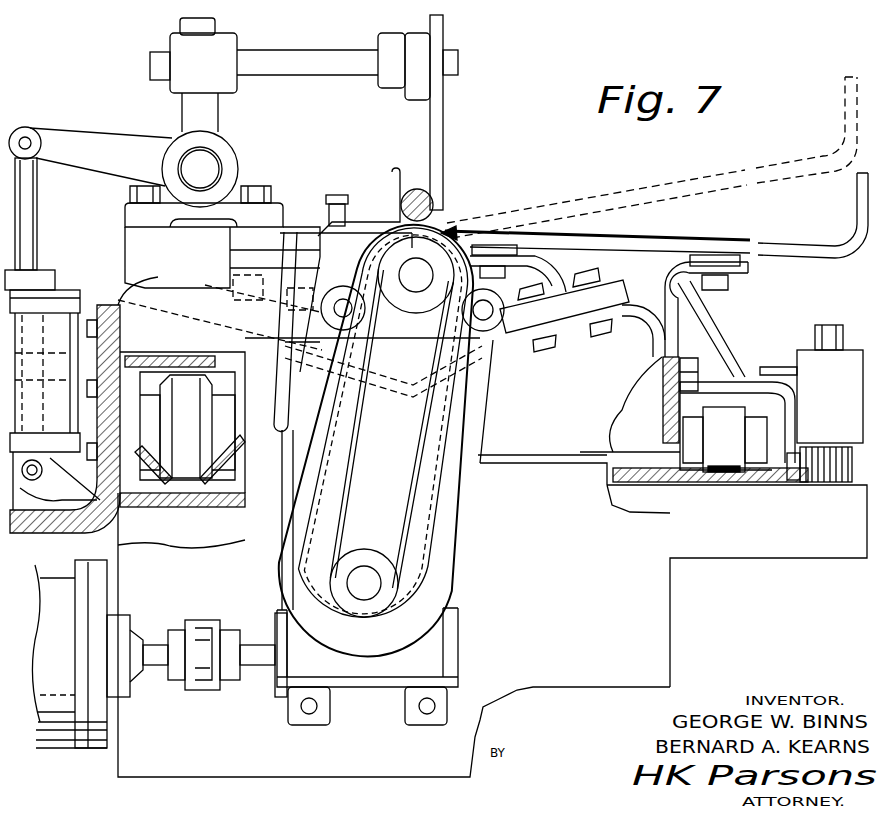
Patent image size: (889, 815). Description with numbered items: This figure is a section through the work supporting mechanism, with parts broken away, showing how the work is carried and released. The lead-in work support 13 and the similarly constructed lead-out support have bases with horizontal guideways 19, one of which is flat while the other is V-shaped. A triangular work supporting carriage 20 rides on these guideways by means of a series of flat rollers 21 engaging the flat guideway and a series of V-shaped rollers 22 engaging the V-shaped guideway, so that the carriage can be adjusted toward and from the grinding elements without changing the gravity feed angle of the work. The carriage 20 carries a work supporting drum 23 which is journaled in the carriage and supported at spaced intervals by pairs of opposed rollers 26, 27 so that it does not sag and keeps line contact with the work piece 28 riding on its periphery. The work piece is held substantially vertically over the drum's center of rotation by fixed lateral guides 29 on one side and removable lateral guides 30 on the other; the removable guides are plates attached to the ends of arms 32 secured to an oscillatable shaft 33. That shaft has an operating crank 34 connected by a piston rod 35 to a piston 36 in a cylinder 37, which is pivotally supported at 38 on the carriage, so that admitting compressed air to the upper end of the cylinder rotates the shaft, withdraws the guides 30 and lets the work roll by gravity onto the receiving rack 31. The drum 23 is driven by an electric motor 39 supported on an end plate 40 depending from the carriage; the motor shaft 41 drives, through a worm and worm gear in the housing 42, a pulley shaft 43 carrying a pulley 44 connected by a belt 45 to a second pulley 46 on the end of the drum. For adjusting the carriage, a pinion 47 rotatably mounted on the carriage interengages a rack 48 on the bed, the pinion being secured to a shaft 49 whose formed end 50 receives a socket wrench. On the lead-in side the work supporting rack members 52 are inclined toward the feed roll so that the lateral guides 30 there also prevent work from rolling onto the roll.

The lead-in work support 13 is at (823, 547).
The horizontal guideways 19 is at (215, 482).
The work supporting carriage 20 is at (662, 306).
The flat rollers 21 is at (723, 423).
The V-shaped rollers 22 is at (175, 507).
The work supporting drum 23 is at (442, 225).
The opposed roller 26 is at (296, 350).
The opposed roller 27 is at (507, 334).
The work piece 28 is at (403, 189).
The lateral guides 29 is at (388, 184).
The removable lateral guides 30 is at (443, 129).
The receiving rack 31 is at (680, 220).
The arms 32 is at (335, 34).
The oscillatable shaft 33 is at (203, 168).
The operating crank 34 is at (102, 143).
The piston rod 35 is at (38, 217).
The piston 36 is at (37, 378).
The cylinder 37 is at (64, 284).
The pivot 38 is at (30, 480).
The electric motor 39 is at (62, 748).
The end plate 40 is at (145, 768).
The motor shaft 41 is at (243, 672).
The housing 42 is at (459, 605).
The pulley shaft 43 is at (368, 590).
The pulley 44 is at (400, 573).
The belt 45 is at (405, 503).
The second pulley 46 is at (455, 232).
The pinion 47 is at (852, 462).
The rack 48 is at (785, 482).
The shaft 49 is at (843, 347).
The formed end 50 is at (829, 326).
The work supporting rack members 52 is at (697, 160).